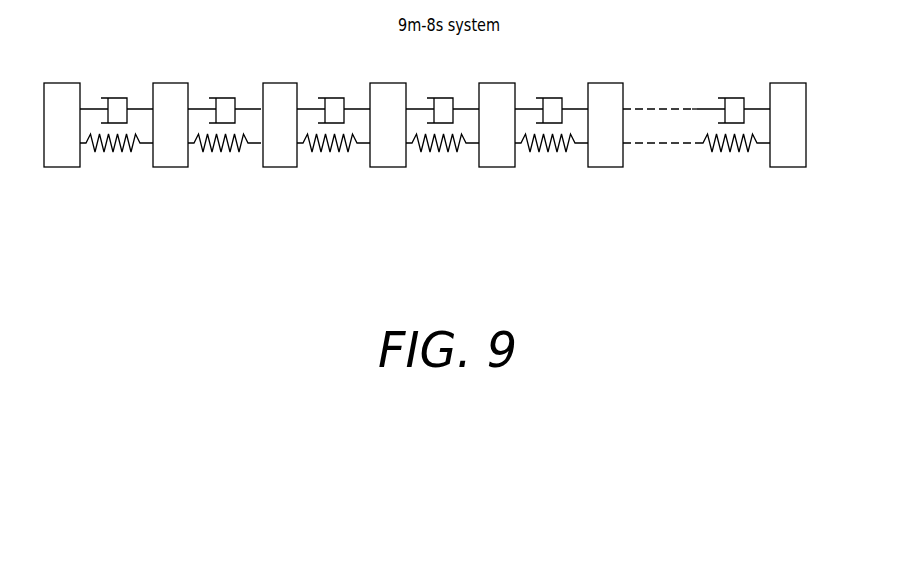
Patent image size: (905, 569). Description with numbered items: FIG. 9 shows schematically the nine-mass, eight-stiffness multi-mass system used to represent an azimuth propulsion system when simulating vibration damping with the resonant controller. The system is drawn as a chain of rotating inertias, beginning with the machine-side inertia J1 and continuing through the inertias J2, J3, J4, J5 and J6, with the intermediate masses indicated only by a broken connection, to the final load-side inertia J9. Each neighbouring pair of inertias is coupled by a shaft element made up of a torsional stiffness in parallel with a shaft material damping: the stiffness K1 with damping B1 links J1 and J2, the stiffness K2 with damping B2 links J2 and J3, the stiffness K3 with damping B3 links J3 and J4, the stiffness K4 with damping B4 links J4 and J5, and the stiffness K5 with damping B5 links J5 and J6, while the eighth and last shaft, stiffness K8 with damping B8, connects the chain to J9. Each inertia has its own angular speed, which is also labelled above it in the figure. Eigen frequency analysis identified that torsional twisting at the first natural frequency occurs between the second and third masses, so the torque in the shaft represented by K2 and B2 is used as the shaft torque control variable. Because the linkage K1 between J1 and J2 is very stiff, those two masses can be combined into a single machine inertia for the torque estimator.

The inertia of mass one J1 is at (62, 141).
The inertia of mass two J2 is at (170, 141).
The inertia of mass three J3 is at (280, 141).
The inertia of mass four J4 is at (388, 141).
The inertia of mass five J5 is at (497, 141).
The inertia of mass six J6 is at (605, 141).
The inertia of mass nine J9 is at (788, 141).
The damping of shaft one B1 is at (116, 98).
The damping of shaft two B2 is at (224, 98).
The damping of shaft three B3 is at (333, 98).
The damping of shaft four B4 is at (442, 98).
The damping of shaft five B5 is at (551, 98).
The damping of shaft eight B8 is at (733, 98).
The stiffness of shaft one K1 is at (116, 158).
The stiffness of shaft two K2 is at (224, 158).
The stiffness of shaft three K3 is at (333, 158).
The stiffness of shaft four K4 is at (442, 158).
The stiffness of shaft five K5 is at (551, 158).
The stiffness of shaft eight K8 is at (733, 158).